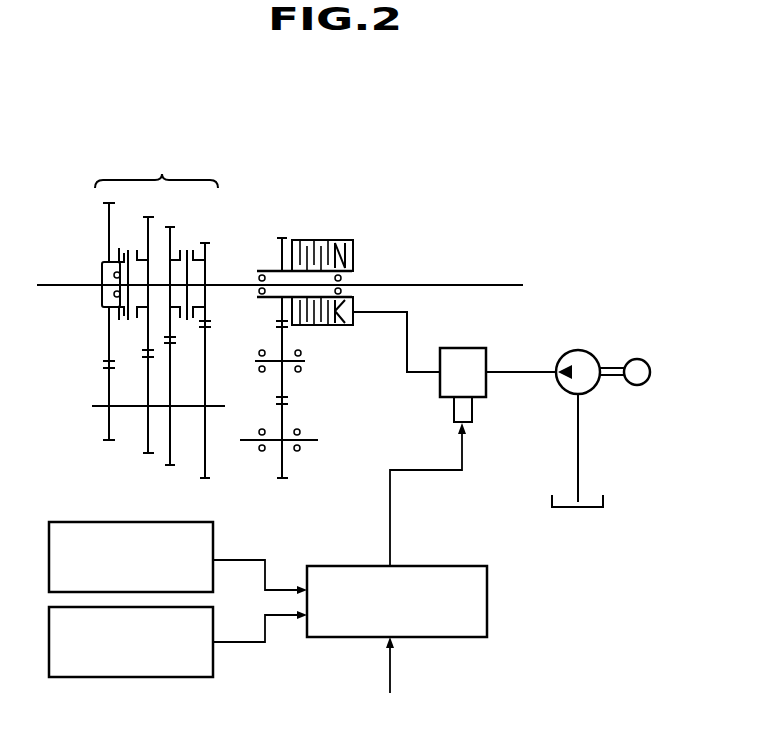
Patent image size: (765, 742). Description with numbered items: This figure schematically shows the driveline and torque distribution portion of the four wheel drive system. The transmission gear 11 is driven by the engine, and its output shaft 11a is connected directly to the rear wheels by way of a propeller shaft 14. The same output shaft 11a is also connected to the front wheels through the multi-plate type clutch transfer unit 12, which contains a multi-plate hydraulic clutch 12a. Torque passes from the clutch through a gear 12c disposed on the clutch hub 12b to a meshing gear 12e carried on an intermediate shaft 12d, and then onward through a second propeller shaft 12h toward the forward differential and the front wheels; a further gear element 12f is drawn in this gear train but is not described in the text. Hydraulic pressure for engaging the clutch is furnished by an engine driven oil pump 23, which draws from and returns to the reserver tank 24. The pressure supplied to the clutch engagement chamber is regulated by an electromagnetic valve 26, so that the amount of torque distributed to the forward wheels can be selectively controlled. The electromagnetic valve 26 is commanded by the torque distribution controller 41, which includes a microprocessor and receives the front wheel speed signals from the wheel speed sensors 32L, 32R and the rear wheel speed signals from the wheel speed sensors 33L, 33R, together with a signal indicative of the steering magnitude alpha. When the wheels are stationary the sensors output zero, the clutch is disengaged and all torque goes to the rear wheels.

The transmission gear 11 is at (158, 314).
The output shaft 11a is at (270, 268).
The multi-plate type clutch transfer unit 12 is at (336, 331).
The multi-plate hydraulic clutch 12a is at (326, 235).
The clutch hub 12b is at (268, 266).
The gear 12c is at (285, 310).
The intermediate shaft 12d is at (300, 360).
The gear 12e is at (282, 386).
The gear 12f is at (285, 417).
The second propeller shaft 12h is at (250, 441).
The propeller shaft 14 is at (460, 282).
The engine drive oil pump 23 is at (578, 350).
The reserver tank 24 is at (603, 498).
The electromagnetic valve 26 is at (475, 348).
The wheel speed sensor 32L is at (178, 537).
The wheel speed sensor 32R is at (83, 521).
The wheel speed sensor 33L is at (178, 664).
The wheel speed sensor 33R is at (95, 677).
The torque distribution controller 41 is at (443, 566).